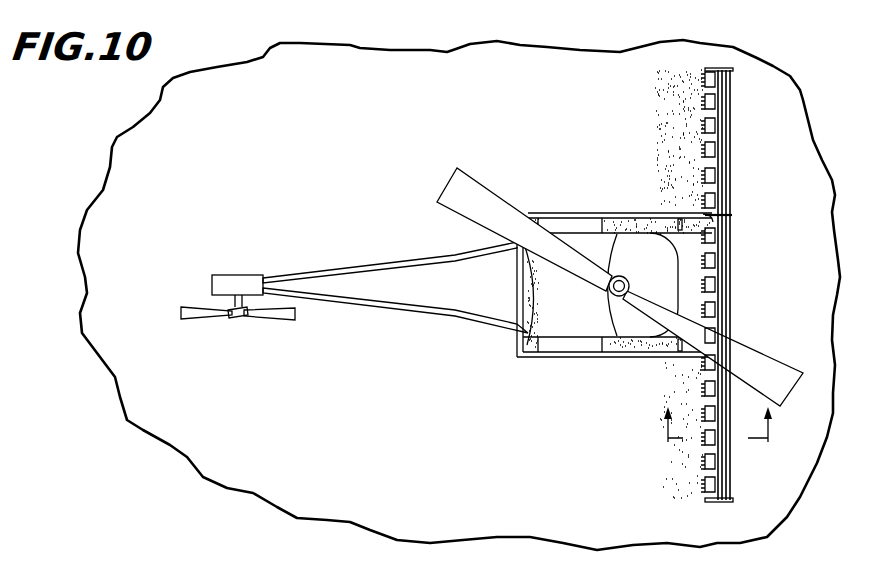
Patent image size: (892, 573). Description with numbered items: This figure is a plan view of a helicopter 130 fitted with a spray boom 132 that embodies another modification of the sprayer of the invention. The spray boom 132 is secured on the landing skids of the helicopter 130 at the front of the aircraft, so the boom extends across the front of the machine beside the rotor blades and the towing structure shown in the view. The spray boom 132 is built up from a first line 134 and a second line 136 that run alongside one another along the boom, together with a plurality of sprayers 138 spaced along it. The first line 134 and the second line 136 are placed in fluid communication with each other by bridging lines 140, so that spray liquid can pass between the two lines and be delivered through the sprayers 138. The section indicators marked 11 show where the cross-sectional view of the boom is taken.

The harvesting carriage assembly 130 is at (593, 173).
The wall structure 132 is at (760, 285).
The wall plate 134 is at (729, 244).
The block members 136 is at (716, 137).
The serrated teeth 138 is at (698, 111).
The rods 140 is at (722, 109).
The section line 11- 11 is at (718, 438).